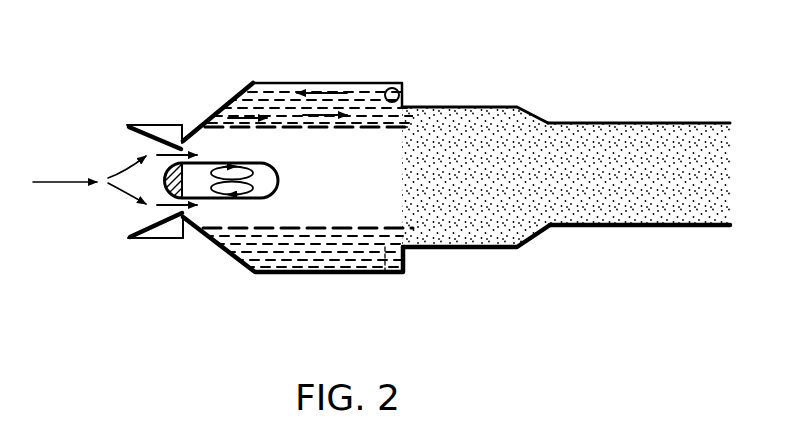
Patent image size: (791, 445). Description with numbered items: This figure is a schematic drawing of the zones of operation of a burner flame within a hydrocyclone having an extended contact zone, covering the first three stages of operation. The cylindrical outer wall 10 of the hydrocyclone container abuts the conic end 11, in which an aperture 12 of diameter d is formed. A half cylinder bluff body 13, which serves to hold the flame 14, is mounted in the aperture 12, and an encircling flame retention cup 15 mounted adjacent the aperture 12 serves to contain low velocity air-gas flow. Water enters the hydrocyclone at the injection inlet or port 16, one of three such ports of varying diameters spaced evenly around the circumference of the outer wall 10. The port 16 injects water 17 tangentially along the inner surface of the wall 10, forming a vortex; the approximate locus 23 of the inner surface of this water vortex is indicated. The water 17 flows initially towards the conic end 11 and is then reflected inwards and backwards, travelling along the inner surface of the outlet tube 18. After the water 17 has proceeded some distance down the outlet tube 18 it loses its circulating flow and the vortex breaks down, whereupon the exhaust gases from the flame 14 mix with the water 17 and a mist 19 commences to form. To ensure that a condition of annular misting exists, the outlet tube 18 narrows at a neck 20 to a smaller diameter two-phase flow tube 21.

The cylindrical outer wall 10 is at (315, 274).
The conic end 11 is at (222, 248).
The aperture 12 is at (180, 212).
The half cylinder bluff body 13 is at (163, 182).
The flame 14 is at (278, 176).
The encircling flame retention cup 15 is at (157, 125).
The injection inlet or port 16 is at (395, 86).
The water 17 is at (352, 92).
The outlet tube 18 is at (388, 250).
The mist 19 is at (485, 180).
The neck 20 is at (525, 110).
The two-phase flow tube 21 is at (630, 123).
The approximate locus of the inner surface of the water vortex 23 is at (313, 225).